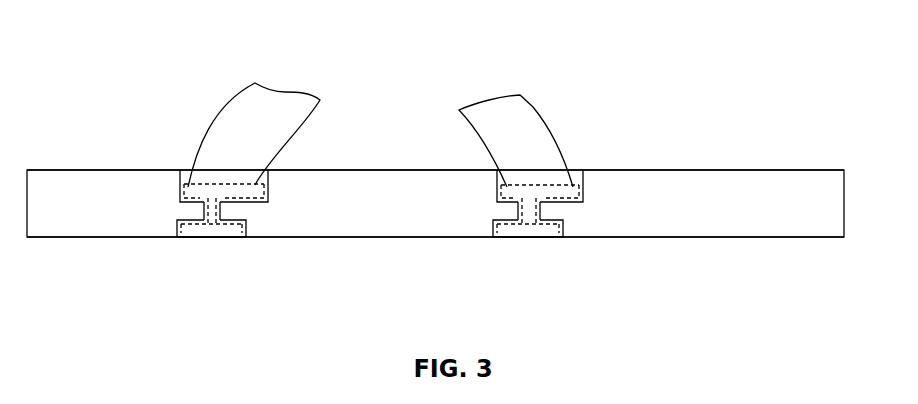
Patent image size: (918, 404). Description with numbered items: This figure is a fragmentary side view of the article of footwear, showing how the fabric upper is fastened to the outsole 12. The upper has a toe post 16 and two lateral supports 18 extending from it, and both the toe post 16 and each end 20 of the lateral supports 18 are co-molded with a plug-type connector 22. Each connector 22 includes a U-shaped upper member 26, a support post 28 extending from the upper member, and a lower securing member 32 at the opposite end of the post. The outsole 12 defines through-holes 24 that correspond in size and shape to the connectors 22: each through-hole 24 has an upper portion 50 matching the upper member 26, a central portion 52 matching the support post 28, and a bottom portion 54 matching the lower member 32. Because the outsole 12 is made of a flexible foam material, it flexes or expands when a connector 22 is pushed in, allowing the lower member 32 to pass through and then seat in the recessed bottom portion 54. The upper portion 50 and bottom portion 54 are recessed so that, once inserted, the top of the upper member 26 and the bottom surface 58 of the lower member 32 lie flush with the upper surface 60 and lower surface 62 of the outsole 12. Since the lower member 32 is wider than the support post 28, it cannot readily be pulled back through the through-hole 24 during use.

The outsole 12 is at (783, 182).
The toe post 16 is at (212, 140).
The lateral supports 18 is at (548, 111).
The end of the lateral supports 20 is at (545, 150).
The plug-type connector 22 is at (377, 222).
The through-hole 24 is at (203, 168).
The U-shaped upper member 26 is at (377, 170).
The support post 28 is at (380, 200).
The lower securing member 32 is at (357, 245).
The upper portion 50 is at (187, 185).
The central portion 52 is at (202, 213).
The bottom portion 54 is at (177, 230).
The bottom surface 58 is at (193, 245).
The upper surface 60 is at (722, 163).
The lower surface 62 is at (742, 244).